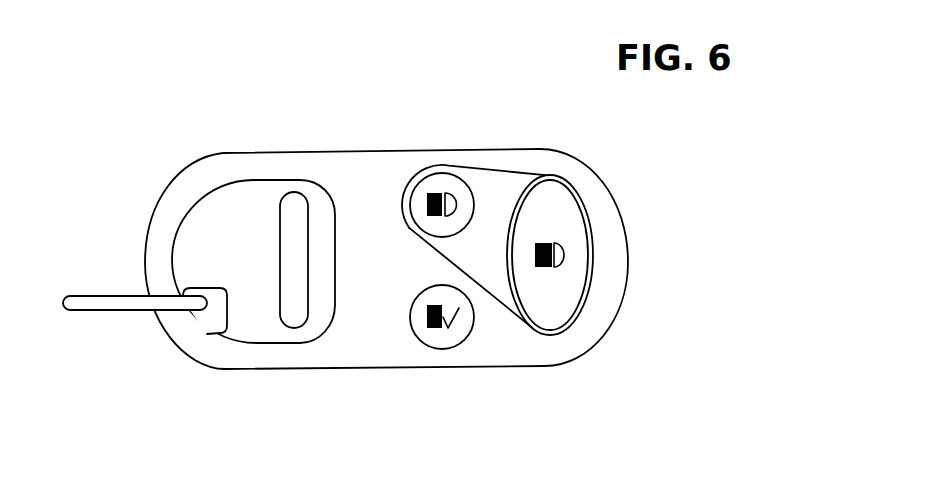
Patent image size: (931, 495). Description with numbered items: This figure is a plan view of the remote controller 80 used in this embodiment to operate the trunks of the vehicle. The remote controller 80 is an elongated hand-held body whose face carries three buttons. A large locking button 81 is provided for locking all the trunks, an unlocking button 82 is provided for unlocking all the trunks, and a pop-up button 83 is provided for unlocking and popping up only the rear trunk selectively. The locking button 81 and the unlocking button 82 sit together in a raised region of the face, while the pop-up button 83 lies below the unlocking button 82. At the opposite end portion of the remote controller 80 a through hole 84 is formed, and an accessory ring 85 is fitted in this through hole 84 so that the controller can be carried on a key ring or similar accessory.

The remote controller 80 is at (550, 381).
The locking button 81 is at (565, 232).
The unlocking button 82 is at (455, 185).
The pop-up button 83 is at (460, 332).
The through hole 84 is at (215, 320).
The accessory ring 85 is at (100, 303).